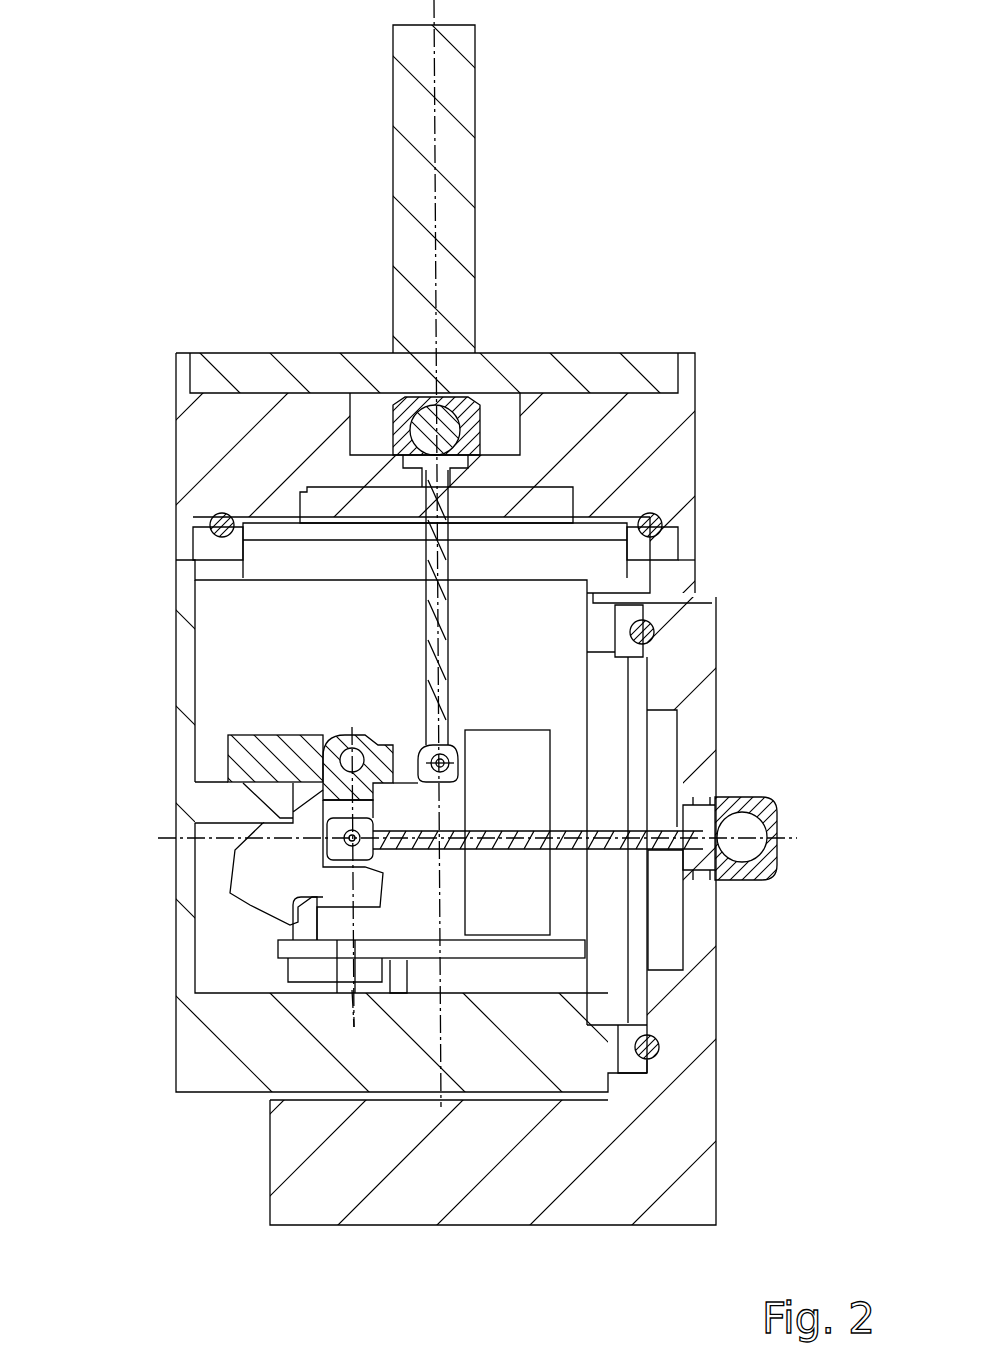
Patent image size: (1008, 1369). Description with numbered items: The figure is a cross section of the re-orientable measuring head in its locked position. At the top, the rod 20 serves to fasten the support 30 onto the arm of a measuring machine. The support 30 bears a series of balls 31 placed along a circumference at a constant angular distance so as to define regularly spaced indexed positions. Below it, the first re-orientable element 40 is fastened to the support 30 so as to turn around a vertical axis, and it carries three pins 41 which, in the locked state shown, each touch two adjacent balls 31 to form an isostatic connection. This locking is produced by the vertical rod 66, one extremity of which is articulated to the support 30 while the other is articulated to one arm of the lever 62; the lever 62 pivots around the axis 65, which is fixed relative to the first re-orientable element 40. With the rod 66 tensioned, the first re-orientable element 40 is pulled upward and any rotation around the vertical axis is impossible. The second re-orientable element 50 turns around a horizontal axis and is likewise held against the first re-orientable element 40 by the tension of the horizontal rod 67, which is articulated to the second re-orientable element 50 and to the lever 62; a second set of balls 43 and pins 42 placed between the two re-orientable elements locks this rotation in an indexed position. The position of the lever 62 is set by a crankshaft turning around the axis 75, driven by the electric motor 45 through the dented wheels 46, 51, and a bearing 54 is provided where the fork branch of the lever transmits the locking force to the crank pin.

The rod 20 is at (456, 117).
The support 30 is at (672, 445).
The balls 31 is at (670, 523).
The first re-orientable element 40 is at (215, 1065).
The pins 41 is at (208, 545).
The pins 42 is at (622, 618).
The balls 43 is at (660, 1042).
The electric motor 45 is at (503, 757).
The dented wheel 46 is at (570, 950).
The second re-orientable element 50 is at (690, 1122).
The dented wheel 51 is at (293, 947).
The bearing 54 is at (313, 932).
The lever 62 is at (258, 862).
The axis 65 is at (342, 737).
The vertical rod 66 is at (427, 647).
The horizontal rod 67 is at (607, 830).
The axis 75 is at (353, 1013).